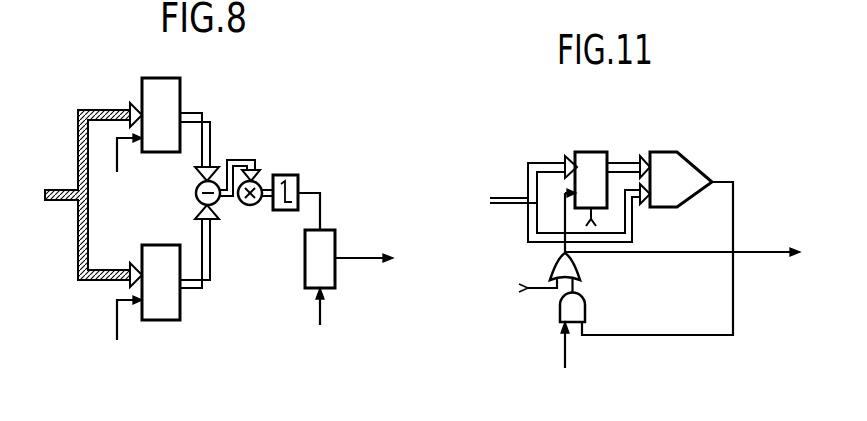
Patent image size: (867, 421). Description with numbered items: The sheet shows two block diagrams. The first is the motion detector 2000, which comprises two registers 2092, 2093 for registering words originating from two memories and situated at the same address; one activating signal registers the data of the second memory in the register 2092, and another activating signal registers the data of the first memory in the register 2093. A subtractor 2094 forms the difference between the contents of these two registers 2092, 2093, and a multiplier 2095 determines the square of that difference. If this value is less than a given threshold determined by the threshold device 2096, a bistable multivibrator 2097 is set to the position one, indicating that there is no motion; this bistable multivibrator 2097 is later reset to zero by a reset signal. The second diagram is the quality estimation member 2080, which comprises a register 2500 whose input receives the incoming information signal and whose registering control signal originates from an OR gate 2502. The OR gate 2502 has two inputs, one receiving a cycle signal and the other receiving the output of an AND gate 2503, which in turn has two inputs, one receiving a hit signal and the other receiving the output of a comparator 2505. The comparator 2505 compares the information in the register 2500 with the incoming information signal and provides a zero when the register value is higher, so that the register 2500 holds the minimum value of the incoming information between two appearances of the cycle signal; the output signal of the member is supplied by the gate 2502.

In FIG. 8, the circuit of FIG. 8 2000 is at (250, 389).
In FIG. 8, the register 2092 is at (175, 93).
In FIG. 8, the register 2093 is at (174, 308).
In FIG. 8, the subtractor 2094 is at (199, 203).
In FIG. 8, the multiplier 2095 is at (250, 206).
In FIG. 8, the threshold device 2096 is at (286, 176).
In FIG. 8, the bistable multivibrator 2097 is at (335, 240).
In FIG. 11, the circuit of FIG. 11 2080 is at (765, 393).
In FIG. 11, the register 2500 is at (592, 158).
In FIG. 11, the OR gate 2502 is at (582, 263).
In FIG. 11, the AND gate 2503 is at (586, 306).
In FIG. 11, the comparator 2505 is at (670, 168).